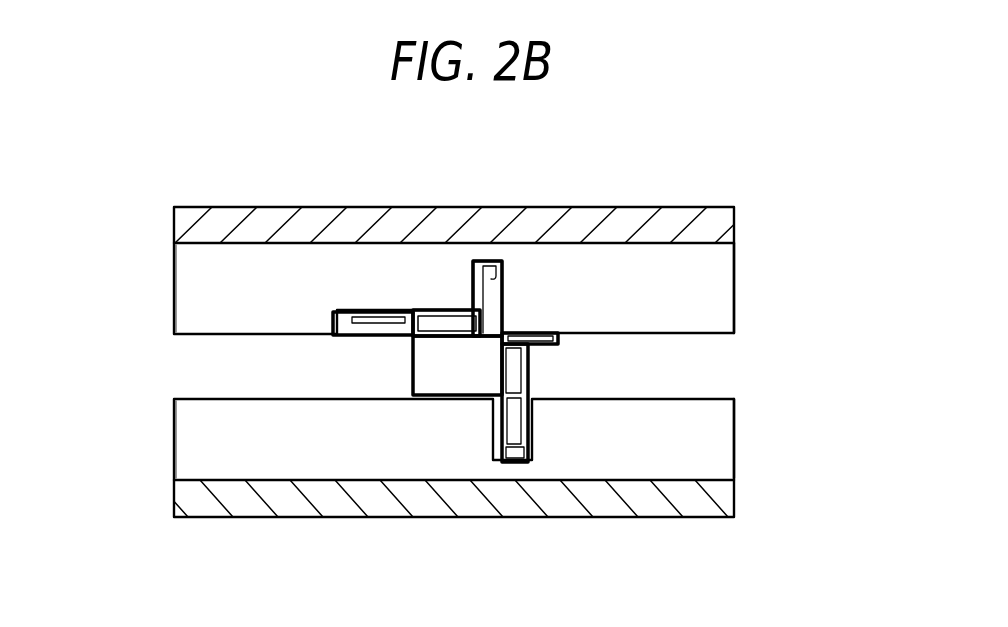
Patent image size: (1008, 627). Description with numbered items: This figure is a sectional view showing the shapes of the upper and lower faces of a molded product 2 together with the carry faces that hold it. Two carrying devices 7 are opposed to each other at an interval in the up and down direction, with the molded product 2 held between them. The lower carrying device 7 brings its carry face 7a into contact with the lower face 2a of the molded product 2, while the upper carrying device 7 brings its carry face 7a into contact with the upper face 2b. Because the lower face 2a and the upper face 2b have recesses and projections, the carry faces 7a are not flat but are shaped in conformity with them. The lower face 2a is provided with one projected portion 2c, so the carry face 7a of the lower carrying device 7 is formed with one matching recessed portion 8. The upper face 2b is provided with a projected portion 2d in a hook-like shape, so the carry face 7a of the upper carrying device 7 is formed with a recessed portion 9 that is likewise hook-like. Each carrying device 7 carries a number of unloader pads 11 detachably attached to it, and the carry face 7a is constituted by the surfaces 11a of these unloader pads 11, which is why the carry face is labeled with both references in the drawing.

The molded product 2 is at (560, 367).
The lower face 2a is at (428, 405).
The upper face 2b is at (357, 311).
The projected portion 2c is at (516, 460).
The projected portion 2d is at (487, 270).
The carrying device 7 is at (125, 233).
The carry face 7a is at (728, 333).
The recessed portion 8 is at (502, 463).
The recessed portion 9 is at (431, 318).
The unloader pad 11 is at (192, 283).
The surface 11a is at (722, 399).